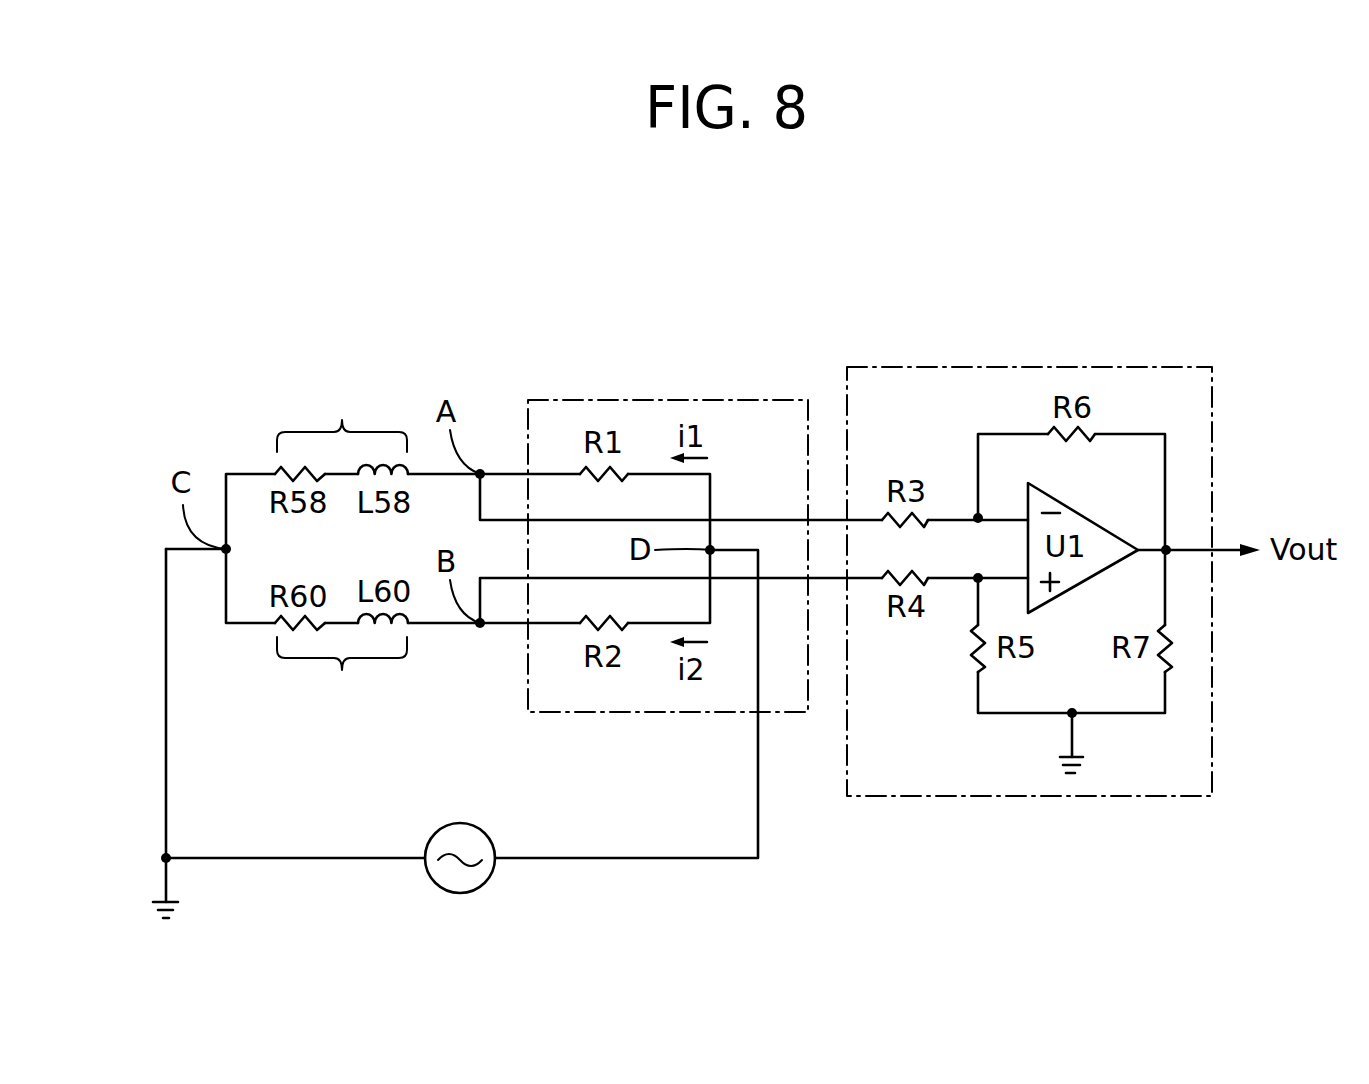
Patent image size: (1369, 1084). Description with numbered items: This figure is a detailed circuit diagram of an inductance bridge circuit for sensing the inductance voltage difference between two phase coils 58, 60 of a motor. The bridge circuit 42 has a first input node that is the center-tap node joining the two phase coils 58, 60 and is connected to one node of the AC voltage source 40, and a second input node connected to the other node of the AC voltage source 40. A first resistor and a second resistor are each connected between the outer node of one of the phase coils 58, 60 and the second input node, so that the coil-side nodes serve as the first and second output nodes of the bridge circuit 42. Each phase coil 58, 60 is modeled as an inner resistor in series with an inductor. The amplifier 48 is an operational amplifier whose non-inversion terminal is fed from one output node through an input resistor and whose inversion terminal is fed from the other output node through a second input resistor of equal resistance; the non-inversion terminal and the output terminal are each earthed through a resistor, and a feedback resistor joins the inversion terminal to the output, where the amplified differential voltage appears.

The AC voltage source 40 is at (442, 890).
The bridge circuit 42 is at (666, 400).
The amplifier 48 is at (1022, 367).
The phase coil 58 is at (342, 419).
The phase coil 60 is at (342, 672).